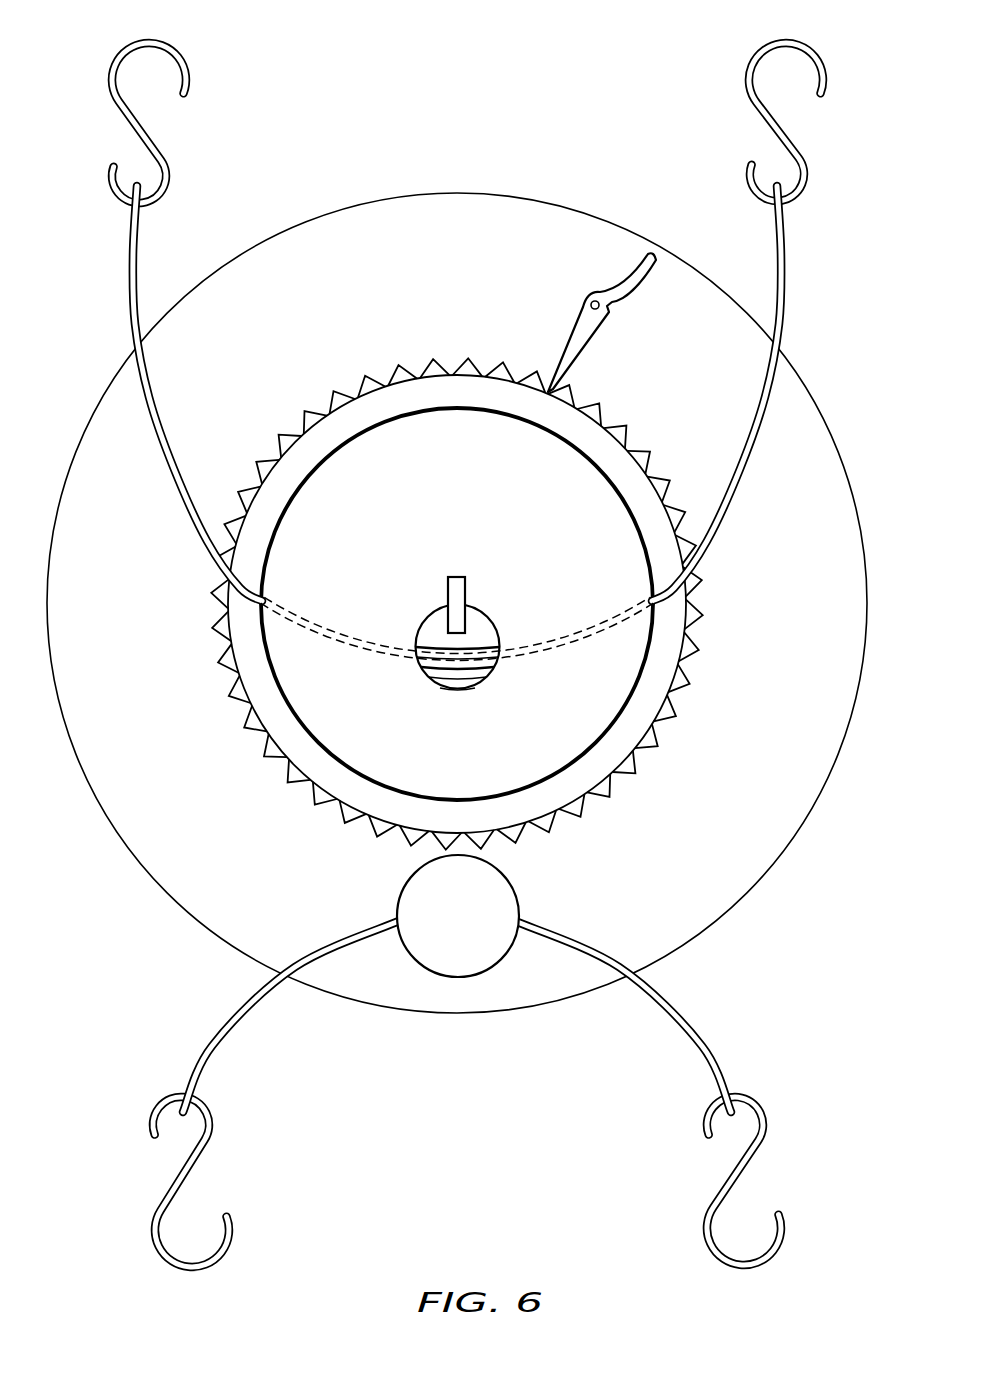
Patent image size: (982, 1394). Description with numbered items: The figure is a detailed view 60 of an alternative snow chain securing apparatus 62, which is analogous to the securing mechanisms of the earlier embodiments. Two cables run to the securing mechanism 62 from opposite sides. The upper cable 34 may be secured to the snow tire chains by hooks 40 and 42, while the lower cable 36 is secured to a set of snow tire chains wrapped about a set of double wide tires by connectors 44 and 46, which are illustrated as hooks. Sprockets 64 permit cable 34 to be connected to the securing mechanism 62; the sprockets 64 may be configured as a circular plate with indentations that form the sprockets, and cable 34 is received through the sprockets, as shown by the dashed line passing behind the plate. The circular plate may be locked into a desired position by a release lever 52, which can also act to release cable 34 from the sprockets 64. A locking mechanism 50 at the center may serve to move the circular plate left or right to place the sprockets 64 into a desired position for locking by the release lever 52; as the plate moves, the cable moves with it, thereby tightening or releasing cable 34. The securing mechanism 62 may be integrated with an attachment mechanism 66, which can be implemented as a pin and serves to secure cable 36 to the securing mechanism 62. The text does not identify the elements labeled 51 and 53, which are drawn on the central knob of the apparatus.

The cable 34 is at (793, 318).
The cable 36 is at (700, 1028).
The hook 40 is at (108, 60).
The hook 42 is at (825, 58).
The connector 44 is at (151, 1242).
The connector 46 is at (788, 1240).
The locking mechanism 50 is at (467, 584).
The base of knob 51 is at (464, 690).
The release lever 52 is at (572, 326).
The knob 53 is at (497, 671).
The detailed view 60 is at (455, 640).
The snow chain securing apparatus 62 is at (83, 429).
The sprockets 64 is at (288, 440).
The attachment mechanism 66 is at (444, 928).